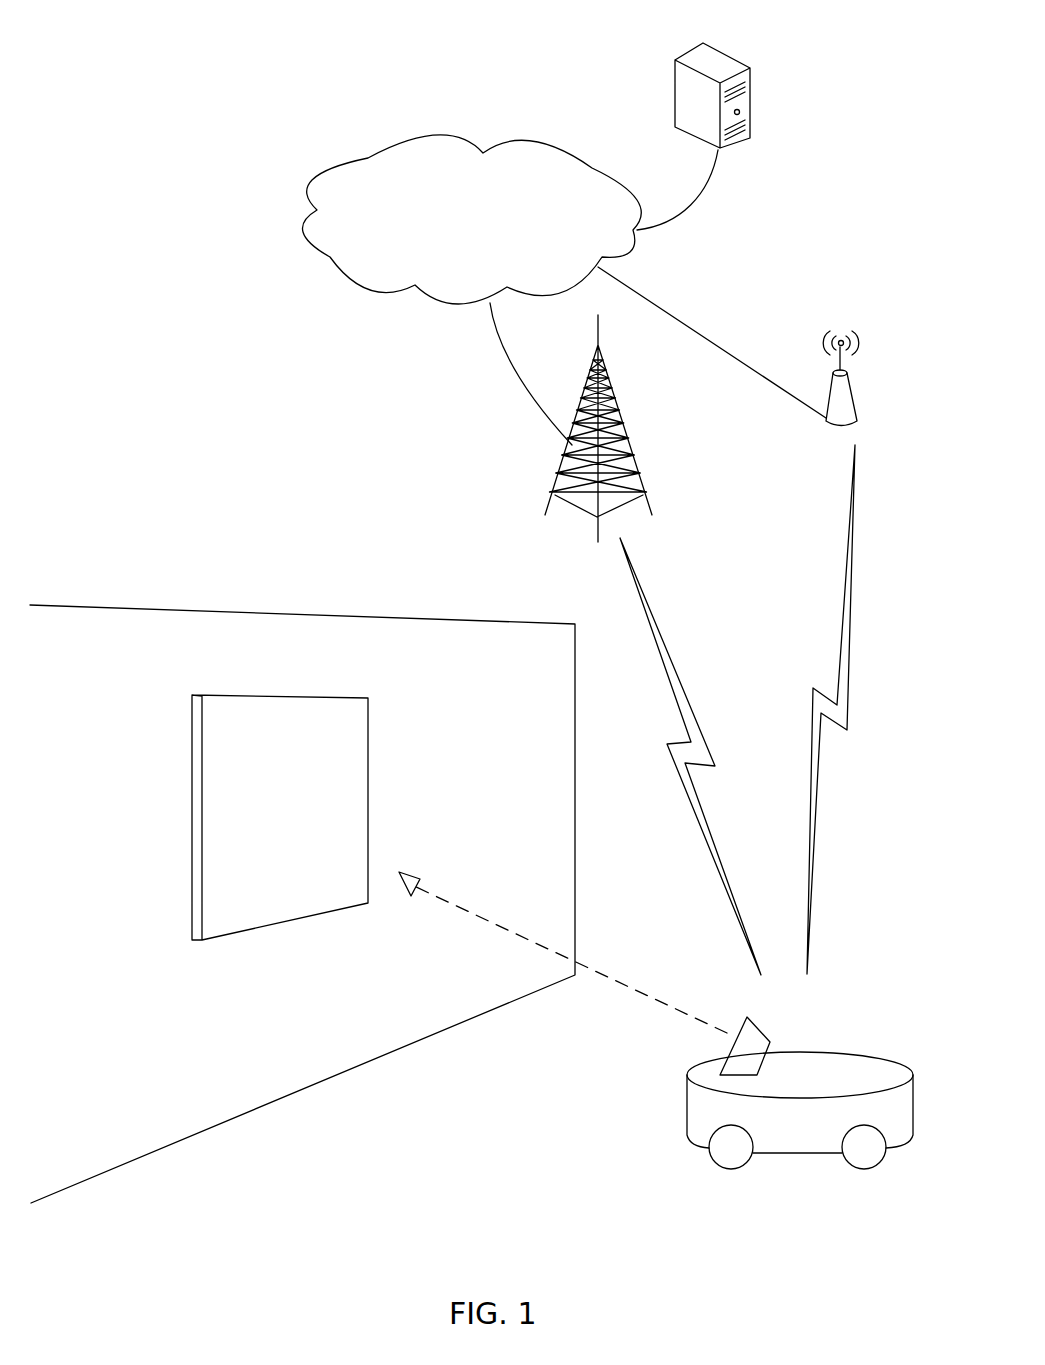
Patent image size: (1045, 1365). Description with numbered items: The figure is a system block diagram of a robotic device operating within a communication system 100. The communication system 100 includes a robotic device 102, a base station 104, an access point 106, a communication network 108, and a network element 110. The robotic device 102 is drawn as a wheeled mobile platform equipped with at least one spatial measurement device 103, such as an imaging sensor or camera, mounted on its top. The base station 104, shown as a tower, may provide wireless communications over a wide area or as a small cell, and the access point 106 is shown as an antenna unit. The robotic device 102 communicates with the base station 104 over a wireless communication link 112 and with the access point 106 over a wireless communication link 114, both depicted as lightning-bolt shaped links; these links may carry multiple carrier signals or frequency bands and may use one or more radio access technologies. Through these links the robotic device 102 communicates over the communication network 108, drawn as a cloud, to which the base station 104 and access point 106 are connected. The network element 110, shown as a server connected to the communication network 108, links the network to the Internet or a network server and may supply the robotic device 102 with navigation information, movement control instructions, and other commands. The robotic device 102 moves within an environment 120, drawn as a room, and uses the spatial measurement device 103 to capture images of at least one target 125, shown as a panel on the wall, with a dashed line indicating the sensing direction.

The communication system 100 is at (135, 47).
The robotic device 102 is at (813, 1157).
The spatial measurement device 103 is at (770, 1041).
The base station 104 is at (565, 470).
The access point 106 is at (850, 381).
The communication network 108 is at (471, 219).
The network element 110 is at (673, 103).
The wireless communication link 112 is at (680, 683).
The wireless communication link 114 is at (850, 677).
The environment 120 is at (117, 624).
The target 125 is at (191, 905).